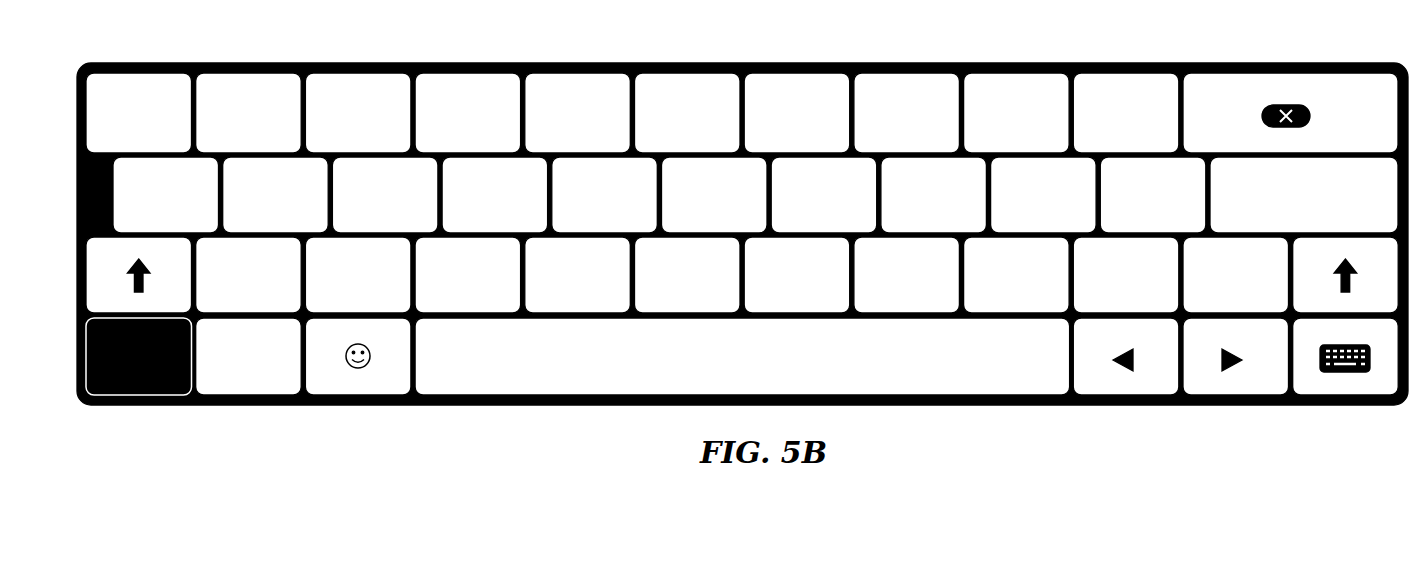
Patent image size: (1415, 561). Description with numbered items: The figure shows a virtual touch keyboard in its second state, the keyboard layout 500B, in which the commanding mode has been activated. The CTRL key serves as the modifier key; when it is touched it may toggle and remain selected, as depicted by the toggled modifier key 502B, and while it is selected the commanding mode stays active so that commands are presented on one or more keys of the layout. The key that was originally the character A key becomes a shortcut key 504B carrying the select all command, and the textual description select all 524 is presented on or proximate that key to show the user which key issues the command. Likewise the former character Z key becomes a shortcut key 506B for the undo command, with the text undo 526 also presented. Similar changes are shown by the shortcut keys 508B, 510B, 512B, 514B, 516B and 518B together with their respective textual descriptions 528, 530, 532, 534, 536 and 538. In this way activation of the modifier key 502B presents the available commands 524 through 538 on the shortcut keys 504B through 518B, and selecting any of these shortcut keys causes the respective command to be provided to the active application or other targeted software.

The keyboard layout 500B is at (984, 415).
The toggled modifier key 502B is at (153, 396).
The shortcut key 504B is at (166, 195).
The shortcut key 506B is at (249, 275).
The shortcut key 508B is at (358, 275).
The shortcut key 510B is at (467, 275).
The shortcut key 512B is at (578, 275).
The shortcut key 514B is at (688, 275).
The shortcut key 516B is at (797, 113).
The shortcut key 518B is at (907, 113).
The textual description 524 is at (138, 207).
The textual description 526 is at (273, 303).
The textual description 528 is at (377, 303).
The textual description 530 is at (494, 300).
The textual description 532 is at (610, 304).
The textual description 534 is at (715, 304).
The textual description 536 is at (819, 122).
The textual description 538 is at (923, 122).